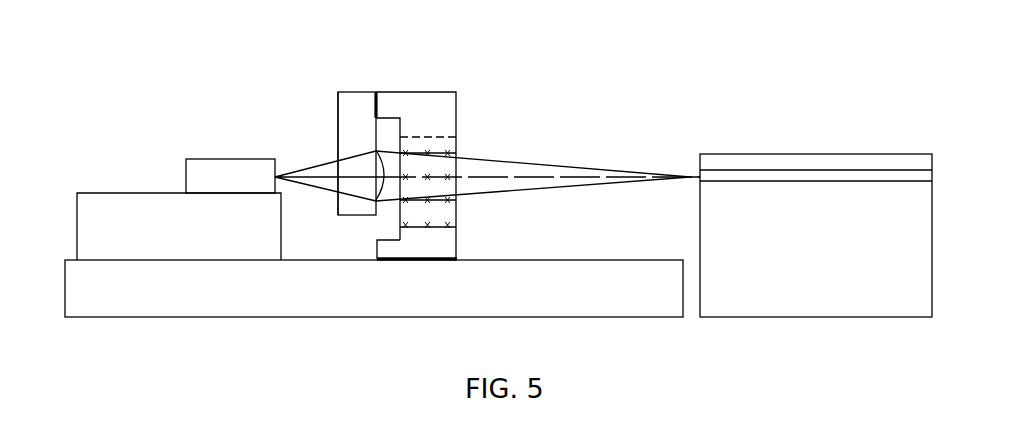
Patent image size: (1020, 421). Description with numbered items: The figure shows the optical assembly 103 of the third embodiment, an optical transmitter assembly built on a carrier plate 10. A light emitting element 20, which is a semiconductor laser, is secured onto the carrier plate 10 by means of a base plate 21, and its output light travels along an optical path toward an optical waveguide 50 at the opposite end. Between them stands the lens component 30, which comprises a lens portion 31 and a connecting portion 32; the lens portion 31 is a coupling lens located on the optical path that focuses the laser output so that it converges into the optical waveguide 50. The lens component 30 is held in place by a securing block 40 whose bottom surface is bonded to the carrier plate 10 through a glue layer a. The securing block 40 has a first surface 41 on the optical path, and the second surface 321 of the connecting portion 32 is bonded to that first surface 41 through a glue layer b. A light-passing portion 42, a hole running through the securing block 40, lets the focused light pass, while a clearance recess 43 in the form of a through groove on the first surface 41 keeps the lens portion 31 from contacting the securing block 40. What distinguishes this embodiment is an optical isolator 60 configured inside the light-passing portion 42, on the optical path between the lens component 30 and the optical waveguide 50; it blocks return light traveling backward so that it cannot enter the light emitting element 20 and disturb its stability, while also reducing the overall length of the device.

The optical assembly 103 is at (54, 37).
The carrier plate 10 is at (150, 299).
The light emitting element 20 is at (230, 168).
The base plate 21 is at (153, 205).
The lens component 30 is at (355, 92).
The lens portion 31 is at (350, 180).
The connecting portion 32 is at (342, 102).
The second surface 321 is at (380, 118).
The securing block 40 is at (437, 100).
The first surface 41 is at (392, 234).
The light-passing portion 42 is at (457, 138).
The clearance recess 43 is at (394, 258).
The optical waveguide 50 is at (743, 165).
The optical isolator 60 is at (456, 198).
The glue layer a is at (378, 93).
The glue layer b is at (460, 259).